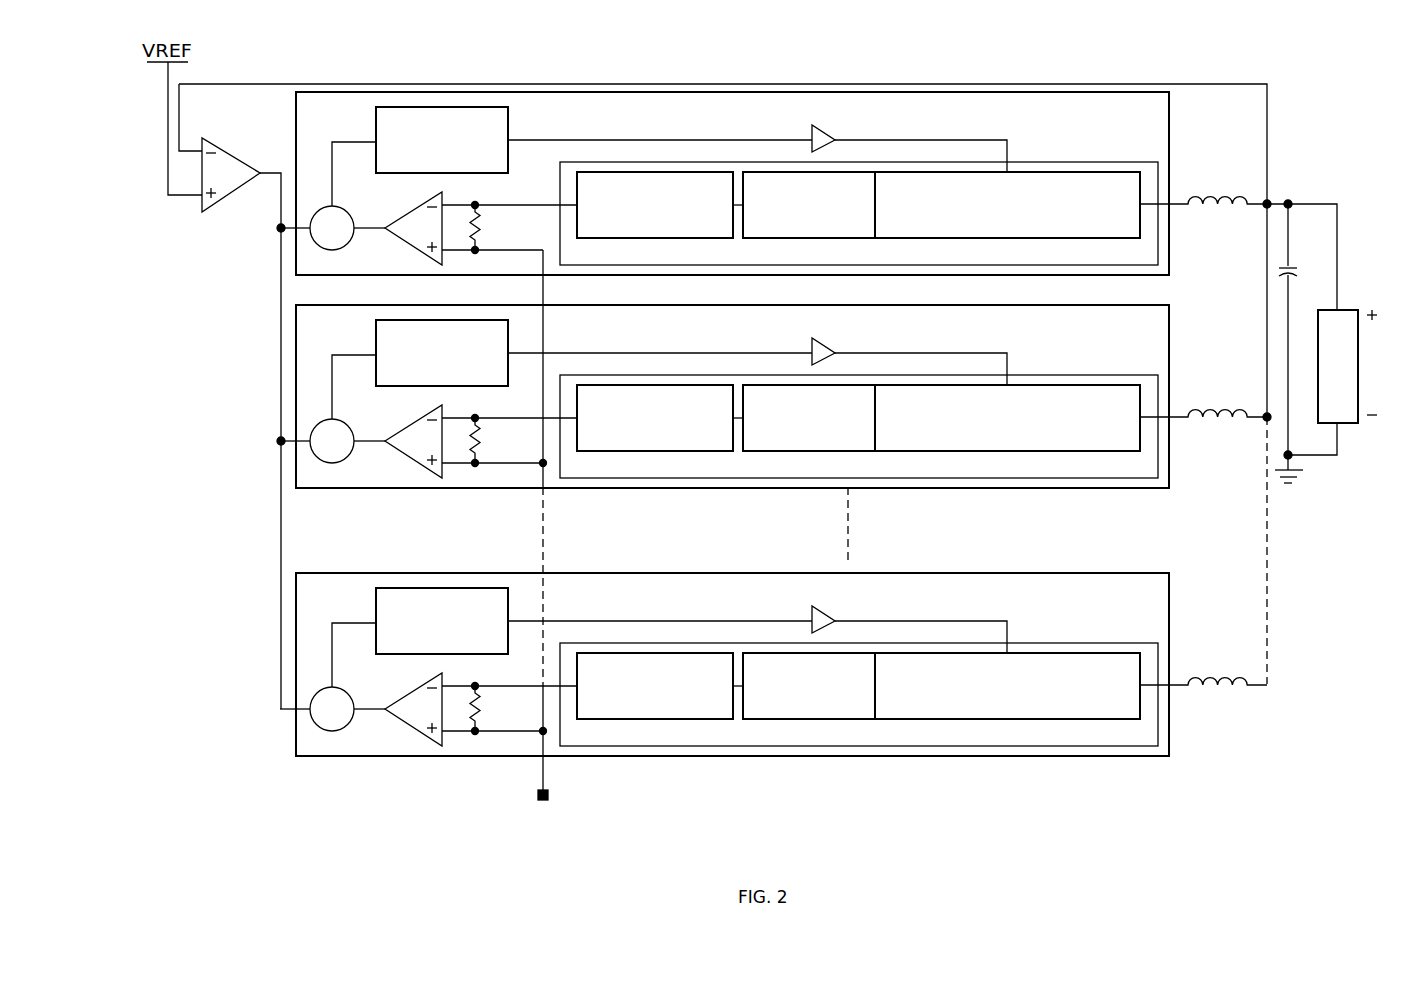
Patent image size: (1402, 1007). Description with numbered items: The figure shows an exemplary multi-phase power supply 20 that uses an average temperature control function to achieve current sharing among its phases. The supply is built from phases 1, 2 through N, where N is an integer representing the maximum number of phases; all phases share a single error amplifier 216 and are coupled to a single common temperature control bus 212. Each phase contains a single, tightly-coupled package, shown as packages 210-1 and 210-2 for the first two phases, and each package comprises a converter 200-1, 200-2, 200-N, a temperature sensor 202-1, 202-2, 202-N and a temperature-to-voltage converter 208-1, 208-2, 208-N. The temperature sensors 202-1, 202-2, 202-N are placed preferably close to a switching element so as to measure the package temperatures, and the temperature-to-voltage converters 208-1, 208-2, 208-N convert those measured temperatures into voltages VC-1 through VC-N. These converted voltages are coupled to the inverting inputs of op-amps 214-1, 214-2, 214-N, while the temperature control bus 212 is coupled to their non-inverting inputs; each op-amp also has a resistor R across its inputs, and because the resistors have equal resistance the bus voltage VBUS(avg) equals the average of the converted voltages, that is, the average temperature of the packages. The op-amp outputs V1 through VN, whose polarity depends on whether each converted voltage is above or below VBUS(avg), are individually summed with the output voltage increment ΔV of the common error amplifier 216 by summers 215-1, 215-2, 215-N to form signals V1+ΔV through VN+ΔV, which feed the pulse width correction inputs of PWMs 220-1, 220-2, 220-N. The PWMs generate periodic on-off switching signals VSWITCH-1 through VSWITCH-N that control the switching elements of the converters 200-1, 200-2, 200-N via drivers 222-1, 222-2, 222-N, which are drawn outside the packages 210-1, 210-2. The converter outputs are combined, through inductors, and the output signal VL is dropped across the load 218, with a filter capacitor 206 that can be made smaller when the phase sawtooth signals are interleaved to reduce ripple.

The multi-phase power supply 20 is at (197, 741).
The error amplifier 216 is at (230, 150).
The phase 1 is at (1170, 142).
The phase 2 is at (774, 397).
The phase N is at (773, 646).
The summer 215-1 is at (337, 208).
The summer 215-2 is at (365, 409).
The summer 215-N is at (366, 677).
The op-amp 214-1 is at (392, 233).
The op-amp 214-2 is at (391, 447).
The op-amp 214-N is at (391, 714).
The PWM 220-1 is at (509, 124).
The PWM 220-2 is at (450, 365).
The PWM 220-N is at (442, 595).
The driver 222-1 is at (812, 133).
The driver 222-2 is at (838, 337).
The driver 222-N is at (839, 605).
The package 210-1 is at (1120, 162).
The package 210-2 is at (859, 399).
The temperature-to-voltage converter 208-1 is at (660, 239).
The temperature-to-voltage converter 208-2 is at (654, 429).
The temperature-to-voltage converter 208-N is at (654, 697).
The temperature sensor 202-1 is at (808, 239).
The temperature sensor 202-2 is at (800, 429).
The temperature sensor 202-N is at (800, 697).
The converter 200-1 is at (1007, 239).
The converter 200-2 is at (1007, 429).
The converter 200-N is at (1007, 697).
The filter capacitor 206 is at (1293, 265).
The load 218 is at (1347, 308).
The temperature control bus 212 is at (540, 770).